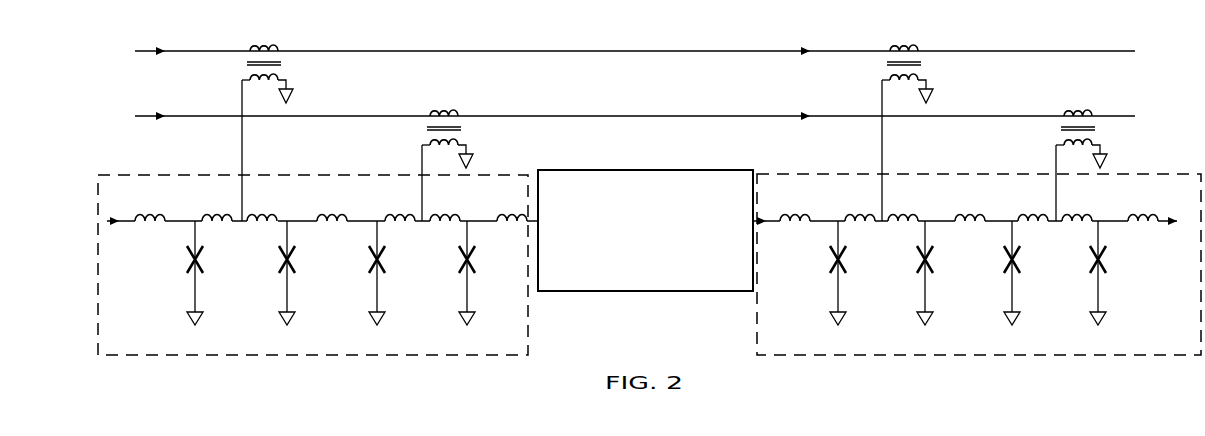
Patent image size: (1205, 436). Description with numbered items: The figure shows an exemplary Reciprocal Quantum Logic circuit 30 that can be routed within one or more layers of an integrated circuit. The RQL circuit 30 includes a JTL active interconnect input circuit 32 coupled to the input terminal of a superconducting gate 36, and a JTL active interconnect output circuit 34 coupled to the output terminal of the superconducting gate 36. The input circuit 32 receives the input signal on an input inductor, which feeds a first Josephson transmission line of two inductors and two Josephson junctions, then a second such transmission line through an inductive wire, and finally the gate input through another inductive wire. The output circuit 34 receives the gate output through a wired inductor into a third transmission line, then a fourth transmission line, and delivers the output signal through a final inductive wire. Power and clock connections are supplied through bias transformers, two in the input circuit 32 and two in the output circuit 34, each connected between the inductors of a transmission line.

The RQL circuit 30 is at (1068, 41).
The JTL active interconnect input circuit 32 is at (309, 175).
The JTL active interconnect output circuit 34 is at (940, 174).
The superconducting gate 36 is at (668, 170).